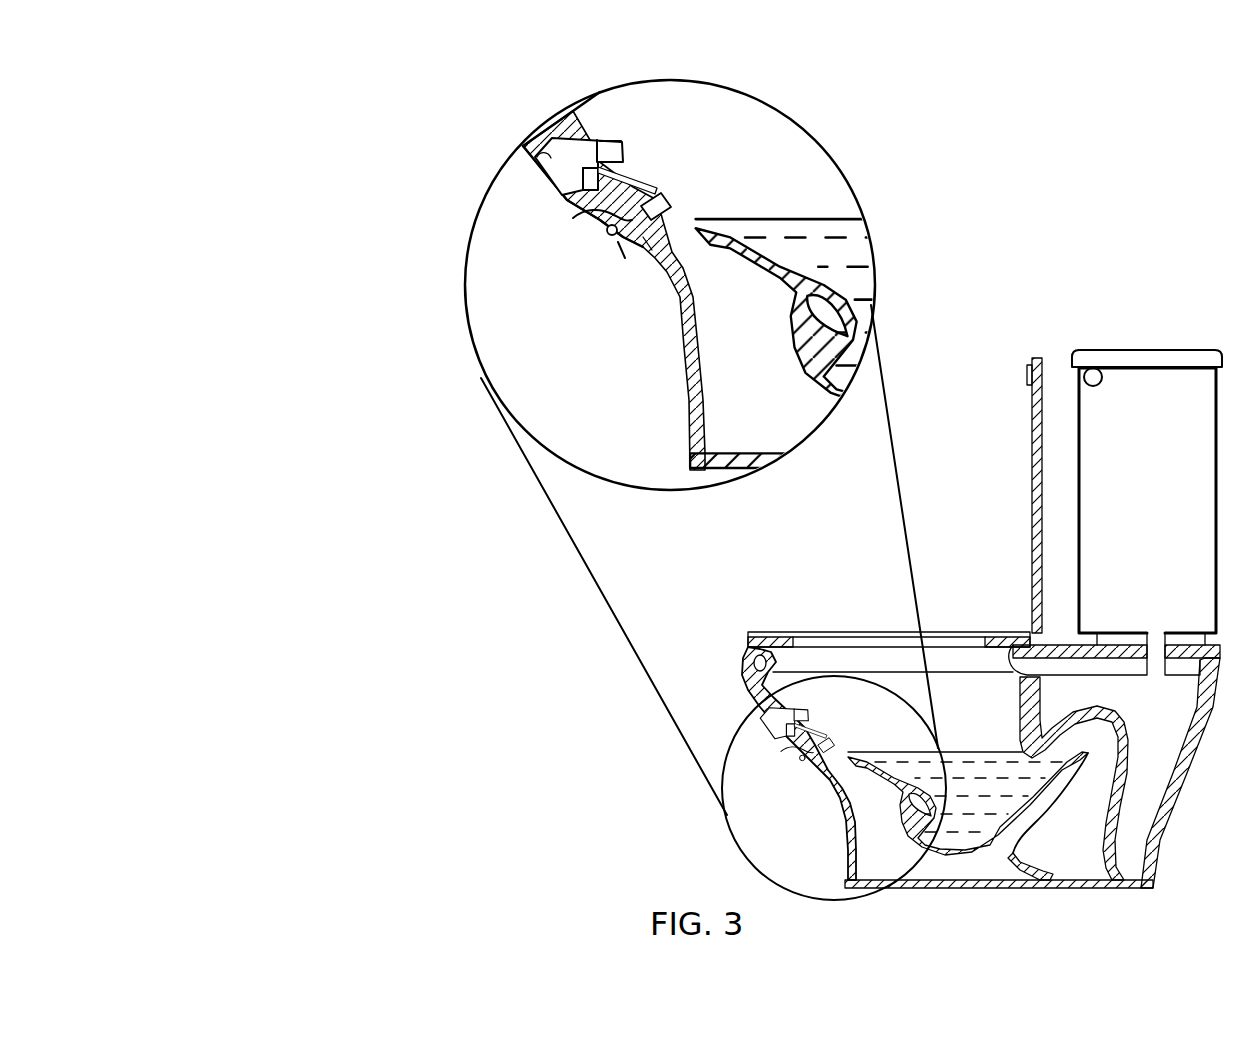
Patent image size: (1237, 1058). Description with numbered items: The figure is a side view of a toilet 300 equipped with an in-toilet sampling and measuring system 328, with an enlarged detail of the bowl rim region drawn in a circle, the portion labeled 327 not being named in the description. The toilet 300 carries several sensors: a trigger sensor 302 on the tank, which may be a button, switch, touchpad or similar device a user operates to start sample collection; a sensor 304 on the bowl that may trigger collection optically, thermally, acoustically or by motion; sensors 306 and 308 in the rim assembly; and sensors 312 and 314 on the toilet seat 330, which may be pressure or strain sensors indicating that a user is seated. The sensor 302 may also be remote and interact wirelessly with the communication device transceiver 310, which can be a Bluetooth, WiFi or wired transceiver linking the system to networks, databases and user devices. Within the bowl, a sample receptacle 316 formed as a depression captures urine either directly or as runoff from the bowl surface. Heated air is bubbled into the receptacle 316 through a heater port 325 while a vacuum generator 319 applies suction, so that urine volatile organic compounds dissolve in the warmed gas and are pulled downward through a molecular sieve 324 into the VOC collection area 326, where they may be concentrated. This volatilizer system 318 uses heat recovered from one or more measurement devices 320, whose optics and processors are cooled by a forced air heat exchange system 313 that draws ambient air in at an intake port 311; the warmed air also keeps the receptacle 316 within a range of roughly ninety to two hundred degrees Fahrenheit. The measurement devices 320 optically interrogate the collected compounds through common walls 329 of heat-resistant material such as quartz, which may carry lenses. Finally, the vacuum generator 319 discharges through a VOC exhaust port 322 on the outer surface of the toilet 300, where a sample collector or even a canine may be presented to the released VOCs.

The toilet 300 is at (330, 62).
The sensor 302 is at (1094, 368).
The sensor 304 is at (1022, 714).
The sensor 306 is at (619, 136).
The sensor 308 is at (626, 150).
The communication device transceiver 310 is at (540, 165).
The intake port 311 is at (562, 197).
The sensor 312 is at (783, 632).
The forced air heat exchange system 313 is at (592, 168).
The sensor 314 is at (992, 632).
The sample receptacle 316 is at (670, 200).
The volatilizer system 318 is at (618, 242).
The vacuum generator 319 is at (607, 234).
The measurement devices 320 is at (578, 136).
The VOC exhaust port 322 is at (622, 240).
The molecular sieve 324 is at (643, 237).
The heater port 325 is at (662, 190).
The VOC collection area 326 is at (668, 242).
The detail view 327 is at (628, 285).
The in-toilet sampling and measuring system 328 is at (886, 174).
The common walls 329 is at (559, 199).
The toilet seat 330 is at (746, 642).